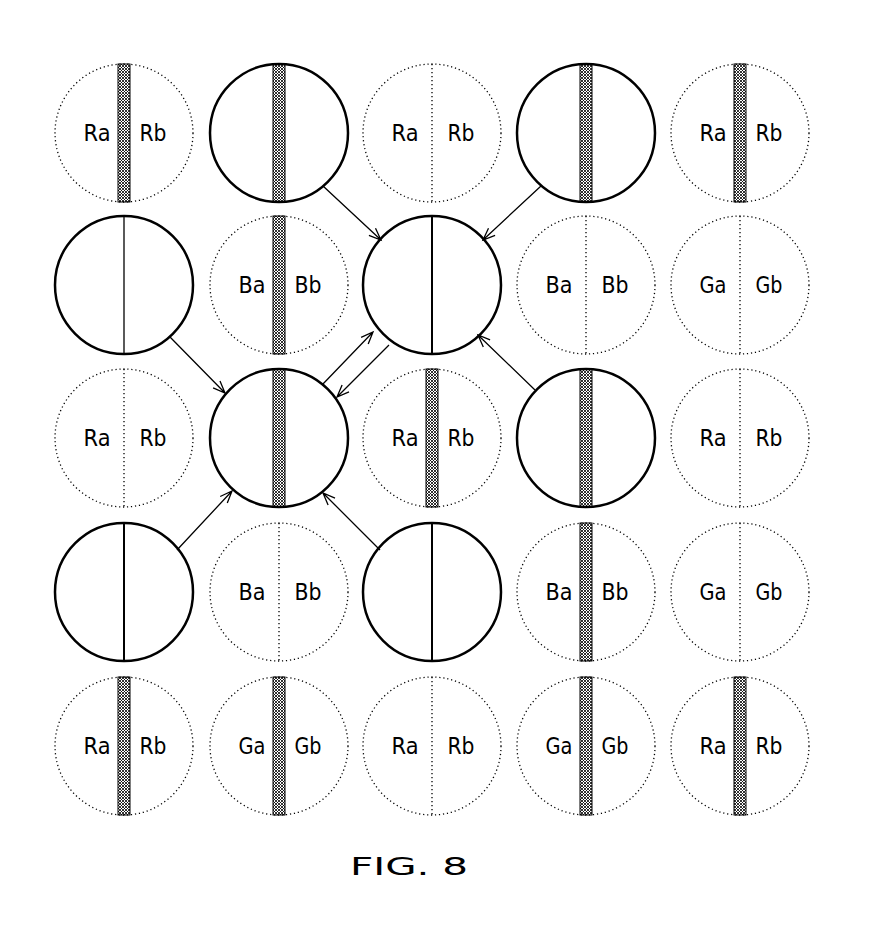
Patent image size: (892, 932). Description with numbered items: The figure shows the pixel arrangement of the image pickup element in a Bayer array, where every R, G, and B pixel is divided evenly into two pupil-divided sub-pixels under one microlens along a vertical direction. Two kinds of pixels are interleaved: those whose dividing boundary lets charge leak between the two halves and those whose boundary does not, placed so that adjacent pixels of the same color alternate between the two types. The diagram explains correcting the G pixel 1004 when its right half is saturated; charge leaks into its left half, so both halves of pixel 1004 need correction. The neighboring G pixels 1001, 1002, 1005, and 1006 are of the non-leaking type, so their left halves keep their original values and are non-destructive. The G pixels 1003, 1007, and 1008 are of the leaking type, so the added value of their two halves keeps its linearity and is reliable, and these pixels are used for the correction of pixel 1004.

The pixel 1001 is at (250, 68).
The pixel 1002 is at (538, 80).
The pixel 1003 is at (78, 233).
The pixel 1004 is at (400, 225).
The pixel 1005 is at (234, 380).
The pixel 1006 is at (632, 383).
The pixel 1007 is at (83, 540).
The pixel 1008 is at (472, 652).